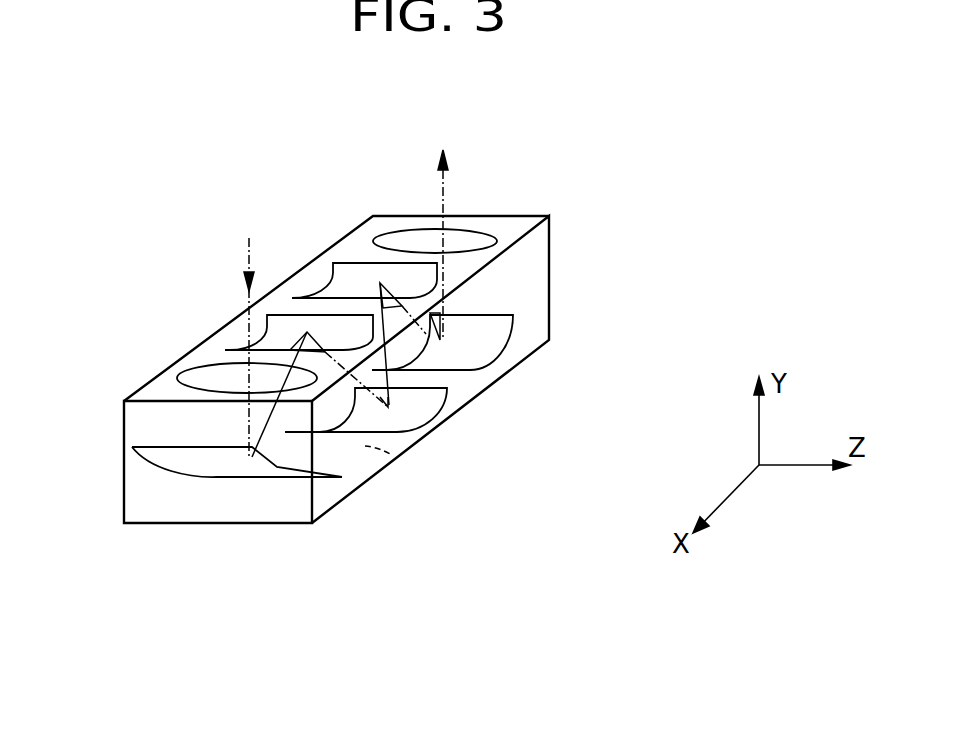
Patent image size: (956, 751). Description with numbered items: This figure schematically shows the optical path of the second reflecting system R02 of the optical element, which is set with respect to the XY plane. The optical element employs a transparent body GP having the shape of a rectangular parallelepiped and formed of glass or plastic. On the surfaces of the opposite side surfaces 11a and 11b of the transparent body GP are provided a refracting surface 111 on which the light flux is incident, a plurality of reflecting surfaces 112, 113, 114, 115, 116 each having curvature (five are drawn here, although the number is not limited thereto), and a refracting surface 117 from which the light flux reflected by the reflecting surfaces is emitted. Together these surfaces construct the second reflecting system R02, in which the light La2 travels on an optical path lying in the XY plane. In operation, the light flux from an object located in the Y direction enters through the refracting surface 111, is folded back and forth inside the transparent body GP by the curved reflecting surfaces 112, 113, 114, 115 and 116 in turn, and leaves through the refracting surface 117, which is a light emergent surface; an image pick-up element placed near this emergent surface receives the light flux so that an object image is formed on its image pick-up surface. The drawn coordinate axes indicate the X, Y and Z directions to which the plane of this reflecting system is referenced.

The refracting surface 111 is at (203, 370).
The reflecting surface 112 is at (278, 472).
The reflecting surface 113 is at (282, 332).
The reflecting surface 114 is at (422, 407).
The reflecting surface 115 is at (347, 275).
The reflecting surface 116 is at (475, 350).
The refracting surface 117 is at (382, 240).
The side surface 11a is at (505, 227).
The side surface 11b is at (397, 462).
The transparent body GP is at (533, 279).
The light La2 is at (245, 250).
The second reflecting system R02 is at (158, 253).